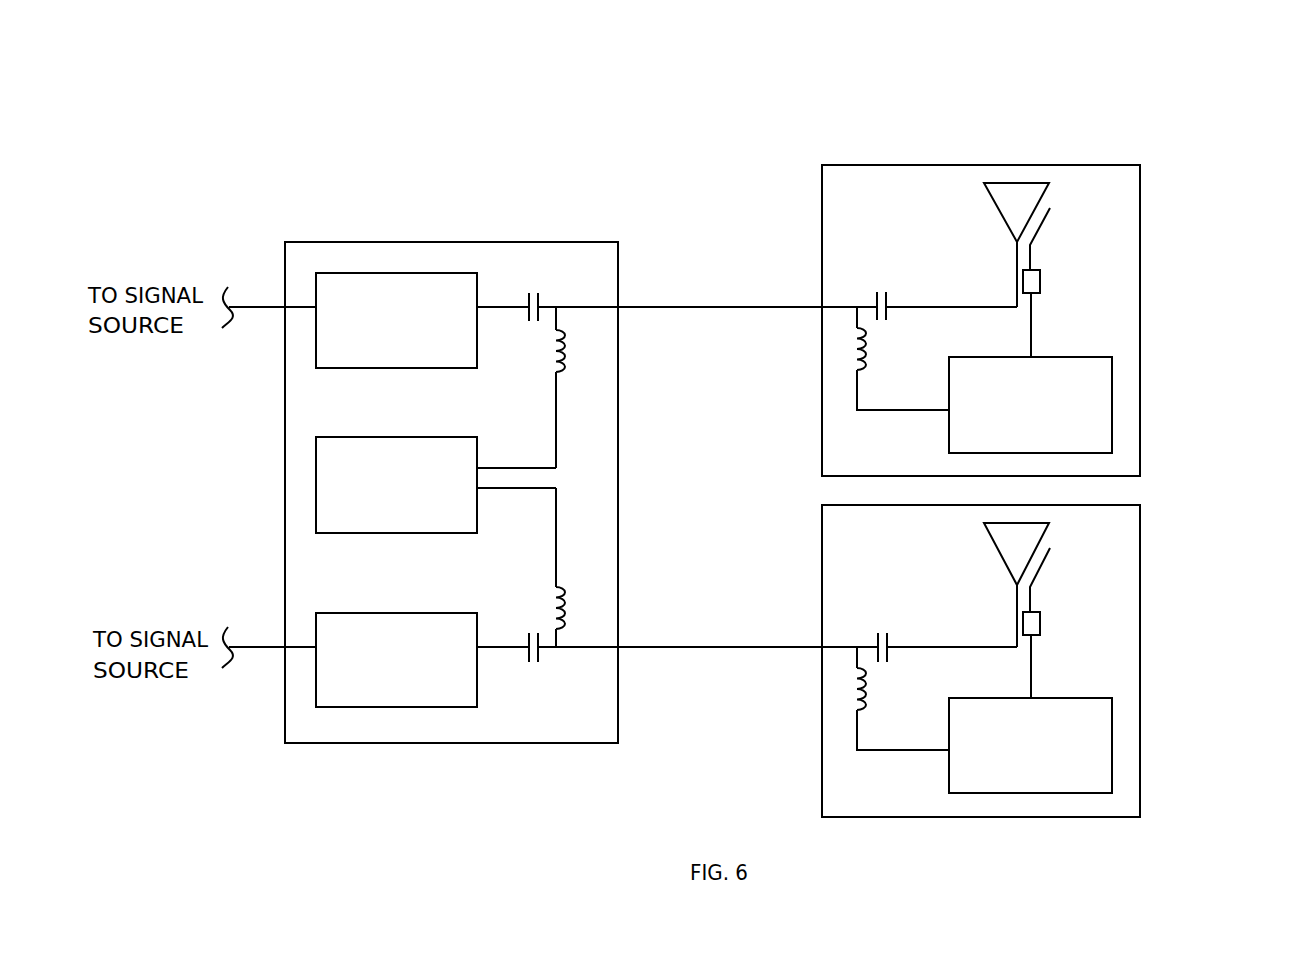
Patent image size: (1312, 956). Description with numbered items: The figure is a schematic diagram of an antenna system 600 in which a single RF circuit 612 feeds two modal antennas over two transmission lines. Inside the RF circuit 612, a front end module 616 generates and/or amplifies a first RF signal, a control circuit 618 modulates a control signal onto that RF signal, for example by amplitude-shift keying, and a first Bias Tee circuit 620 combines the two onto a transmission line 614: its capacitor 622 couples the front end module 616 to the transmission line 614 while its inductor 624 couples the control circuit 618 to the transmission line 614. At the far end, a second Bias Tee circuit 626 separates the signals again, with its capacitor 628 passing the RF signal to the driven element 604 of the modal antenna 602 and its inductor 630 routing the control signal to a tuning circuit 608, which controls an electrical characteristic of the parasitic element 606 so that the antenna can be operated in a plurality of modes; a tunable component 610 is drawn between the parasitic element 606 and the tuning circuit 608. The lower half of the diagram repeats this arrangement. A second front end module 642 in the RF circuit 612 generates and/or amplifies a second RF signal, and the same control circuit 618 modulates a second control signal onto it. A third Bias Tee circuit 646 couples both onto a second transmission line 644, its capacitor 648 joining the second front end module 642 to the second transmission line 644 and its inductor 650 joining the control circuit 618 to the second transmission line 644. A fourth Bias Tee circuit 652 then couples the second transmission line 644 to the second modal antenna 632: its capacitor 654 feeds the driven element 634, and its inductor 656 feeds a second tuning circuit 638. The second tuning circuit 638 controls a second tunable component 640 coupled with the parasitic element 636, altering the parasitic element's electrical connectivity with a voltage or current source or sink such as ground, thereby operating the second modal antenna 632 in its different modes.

The antenna system 600 is at (211, 73).
The modal antenna 602 is at (1202, 165).
The driven element 604 is at (1052, 188).
The parasitic element 606 is at (1042, 228).
The tuning circuit 608 is at (1048, 421).
The first tuning element 610 is at (1040, 293).
The RF circuit 612 is at (332, 242).
The transmission line 614 is at (677, 307).
The front end module 616 is at (414, 337).
The control circuit 618 is at (414, 499).
The first Bias Tee circuit 620 is at (604, 335).
The capacitor 622 is at (539, 293).
The inductor 624 is at (567, 352).
The second Bias Tee circuit 626 is at (883, 330).
The capacitor 628 is at (877, 300).
The inductor 630 is at (850, 362).
The second modal antenna 632 is at (1202, 505).
The driven element 634 is at (1052, 528).
The parasitic element 636 is at (1042, 568).
The second tuning circuit 638 is at (1048, 761).
The second tunable component 640 is at (1040, 635).
The second front end module 642 is at (414, 675).
The second transmission line 644 is at (727, 647).
The third Bias Tee circuit 646 is at (610, 593).
The capacitor 648 is at (540, 655).
The inductor 650 is at (562, 588).
The fourth Bias Tee circuit 652 is at (889, 659).
The capacitor 654 is at (878, 635).
The inductor 656 is at (850, 705).